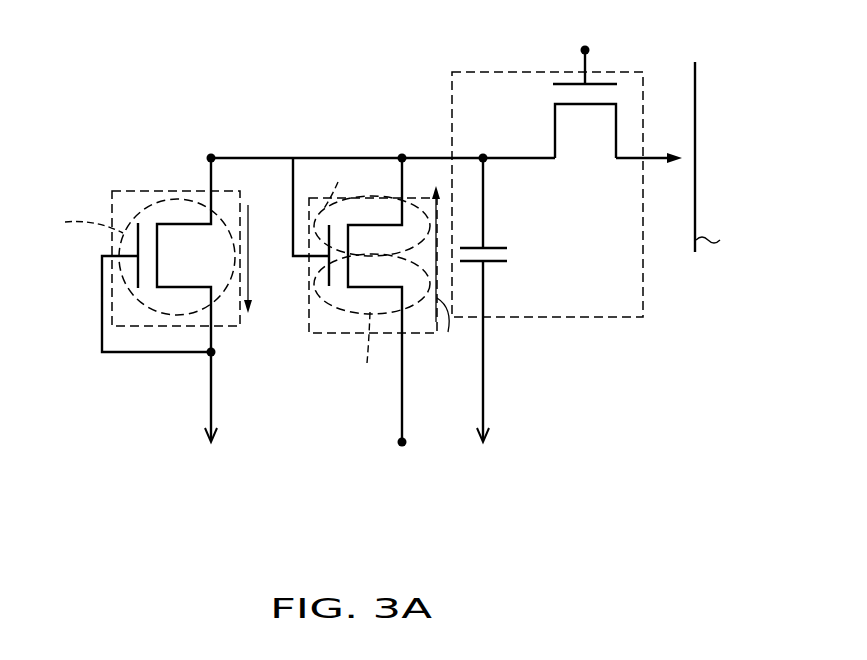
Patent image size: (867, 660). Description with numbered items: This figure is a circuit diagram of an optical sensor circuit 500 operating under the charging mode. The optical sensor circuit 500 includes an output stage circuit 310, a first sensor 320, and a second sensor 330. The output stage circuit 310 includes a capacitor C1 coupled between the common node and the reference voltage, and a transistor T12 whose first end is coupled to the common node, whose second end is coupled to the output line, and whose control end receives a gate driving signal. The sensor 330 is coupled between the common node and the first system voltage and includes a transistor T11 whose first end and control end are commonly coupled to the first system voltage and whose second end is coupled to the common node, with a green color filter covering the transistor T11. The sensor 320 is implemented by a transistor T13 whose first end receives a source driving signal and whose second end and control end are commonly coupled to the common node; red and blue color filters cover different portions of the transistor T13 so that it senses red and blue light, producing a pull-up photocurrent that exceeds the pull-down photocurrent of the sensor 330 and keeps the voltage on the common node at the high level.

The optical sensor circuit 500 is at (399, 289).
The output stage circuit 310 is at (632, 67).
The sensor 320 is at (332, 333).
The sensor 330 is at (152, 190).
The transistor T11 is at (168, 255).
The transistor T12 is at (585, 102).
The transistor T13 is at (373, 288).
The capacitor C1 is at (496, 299).